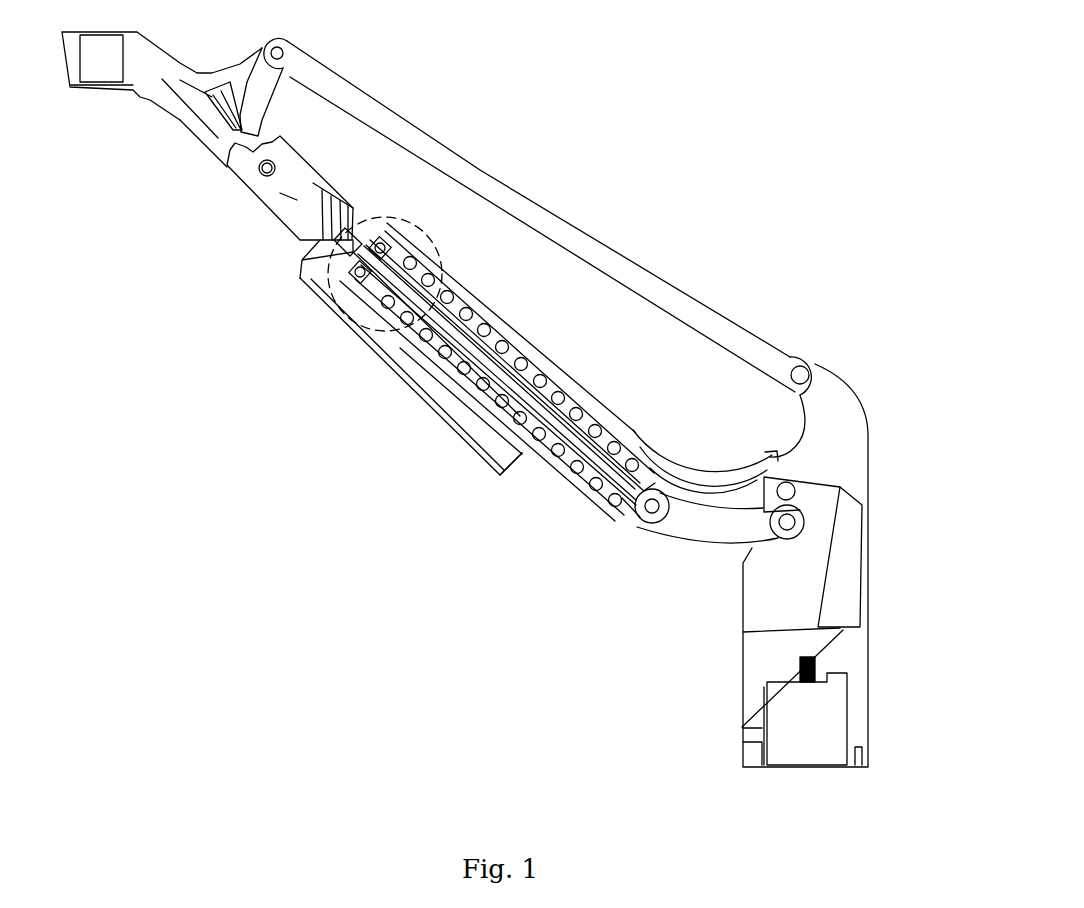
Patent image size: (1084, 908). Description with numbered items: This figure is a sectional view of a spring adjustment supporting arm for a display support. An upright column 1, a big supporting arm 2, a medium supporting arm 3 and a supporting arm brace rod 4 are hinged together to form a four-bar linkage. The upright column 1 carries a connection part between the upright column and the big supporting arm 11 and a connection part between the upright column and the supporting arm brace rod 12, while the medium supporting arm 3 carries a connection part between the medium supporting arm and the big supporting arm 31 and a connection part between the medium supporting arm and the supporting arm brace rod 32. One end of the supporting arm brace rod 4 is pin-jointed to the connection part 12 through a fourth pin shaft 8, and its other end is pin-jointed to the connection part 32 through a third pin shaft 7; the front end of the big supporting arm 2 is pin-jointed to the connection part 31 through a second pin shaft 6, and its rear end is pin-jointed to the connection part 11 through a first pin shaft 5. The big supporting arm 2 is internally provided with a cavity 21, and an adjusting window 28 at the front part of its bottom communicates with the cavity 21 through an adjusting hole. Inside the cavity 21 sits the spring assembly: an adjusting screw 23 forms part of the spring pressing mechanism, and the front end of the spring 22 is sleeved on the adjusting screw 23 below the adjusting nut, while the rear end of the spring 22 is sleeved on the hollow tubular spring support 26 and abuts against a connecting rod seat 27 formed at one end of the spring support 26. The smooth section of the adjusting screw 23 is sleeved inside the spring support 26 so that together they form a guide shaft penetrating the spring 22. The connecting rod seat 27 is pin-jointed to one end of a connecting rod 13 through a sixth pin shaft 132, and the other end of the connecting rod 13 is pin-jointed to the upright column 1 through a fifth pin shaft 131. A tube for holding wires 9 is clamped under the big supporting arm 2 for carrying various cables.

The upright column 1 is at (848, 485).
The big supporting arm 2 is at (562, 483).
The medium supporting arm 3 is at (177, 107).
The supporting arm brace rod 4 is at (650, 280).
The first pin shaft 5 is at (795, 492).
The second pin shaft 6 is at (262, 178).
The third pin shaft 7 is at (282, 52).
The fourth pin shaft 8 is at (802, 372).
The tube for holding wires 9 is at (380, 365).
The connection part between upright column and big supporting arm 11 is at (813, 510).
The connection part between upright column and supporting arm brace rod 12 is at (827, 383).
The connecting rod 13 is at (717, 541).
The cavity 21 is at (485, 480).
The spring 22 is at (448, 432).
The adjusting screw 23 is at (477, 313).
The spring support 26 is at (640, 438).
The connecting rod seat 27 is at (627, 527).
The adjusting window 28 is at (300, 195).
The connection part between medium supporting arm and big supporting arm 31 is at (220, 138).
The connection part between medium supporting arm and supporting arm brace rod 32 is at (257, 78).
The fifth pin shaft 131 is at (793, 527).
The sixth pin shaft 132 is at (643, 528).